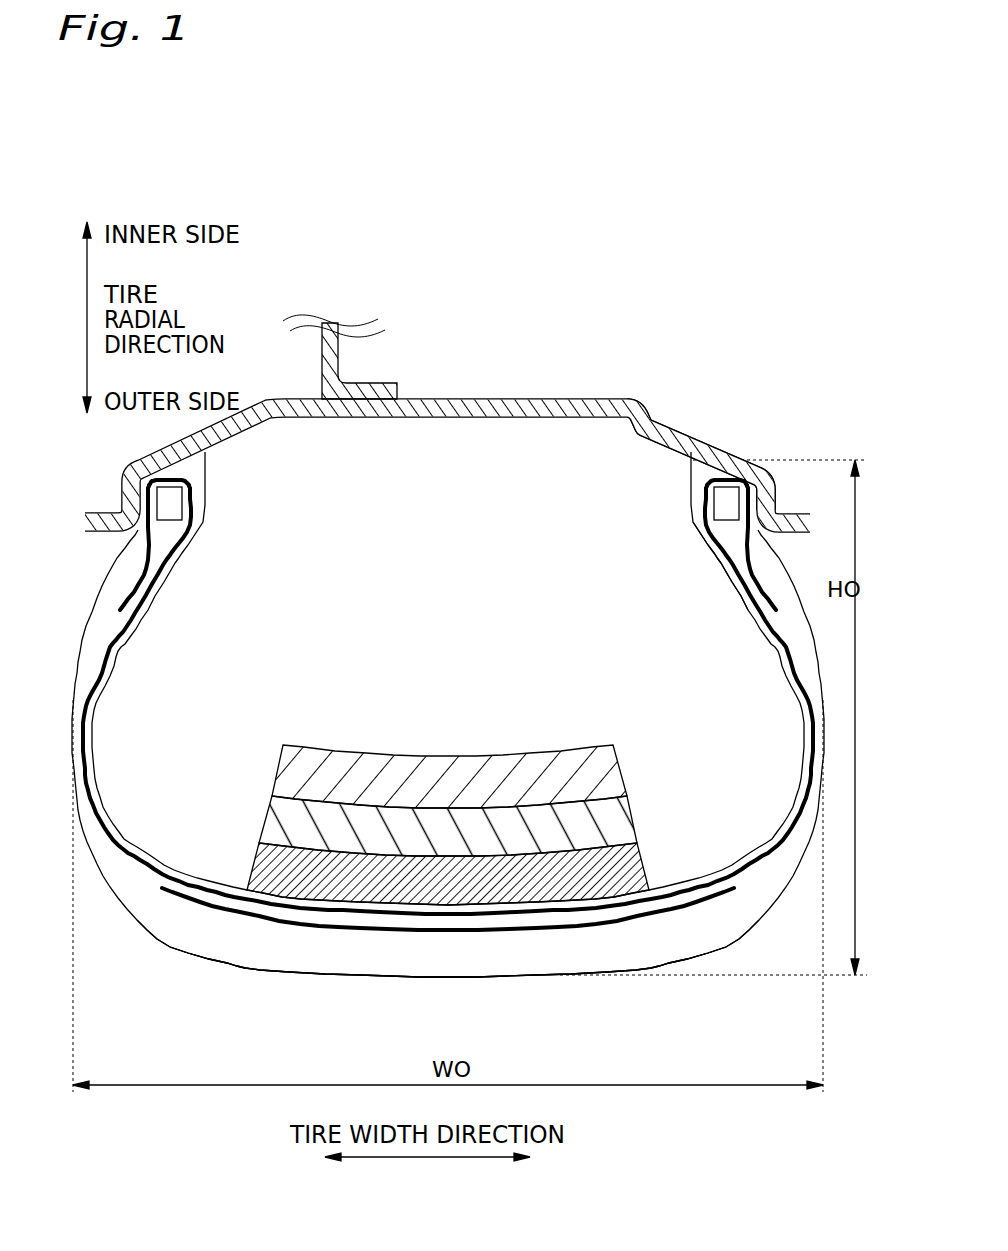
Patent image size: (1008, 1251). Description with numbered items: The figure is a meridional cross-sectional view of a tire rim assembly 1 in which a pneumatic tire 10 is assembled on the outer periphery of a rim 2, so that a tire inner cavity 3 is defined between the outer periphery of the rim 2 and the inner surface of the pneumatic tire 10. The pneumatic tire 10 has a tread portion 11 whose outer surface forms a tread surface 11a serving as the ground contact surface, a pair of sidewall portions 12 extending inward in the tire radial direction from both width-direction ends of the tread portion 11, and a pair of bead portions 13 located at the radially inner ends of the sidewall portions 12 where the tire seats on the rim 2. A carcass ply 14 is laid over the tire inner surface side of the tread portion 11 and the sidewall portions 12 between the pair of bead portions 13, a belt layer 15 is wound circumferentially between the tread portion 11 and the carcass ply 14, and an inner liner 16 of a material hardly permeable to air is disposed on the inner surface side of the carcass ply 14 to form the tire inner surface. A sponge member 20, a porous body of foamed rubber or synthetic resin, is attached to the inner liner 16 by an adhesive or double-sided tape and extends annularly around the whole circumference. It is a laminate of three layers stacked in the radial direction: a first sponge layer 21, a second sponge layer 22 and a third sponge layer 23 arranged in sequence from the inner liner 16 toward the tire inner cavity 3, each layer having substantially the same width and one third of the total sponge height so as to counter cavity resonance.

The tire rim assembly 1 is at (517, 385).
The rim 2 is at (668, 432).
The tire inner cavity 3 is at (452, 602).
The pneumatic tire 10 is at (167, 967).
The tread portion 11 is at (322, 962).
The tread surface 11a is at (280, 973).
The sidewall portions 12 is at (97, 650).
The bead portions 13 is at (200, 516).
The carcass ply 14 is at (118, 822).
The belt layer 15 is at (504, 932).
The inner liner 16 is at (720, 568).
The sponge member 20 is at (428, 789).
The first sponge layer 21 is at (251, 865).
The second sponge layer 22 is at (267, 813).
The third sponge layer 23 is at (290, 777).